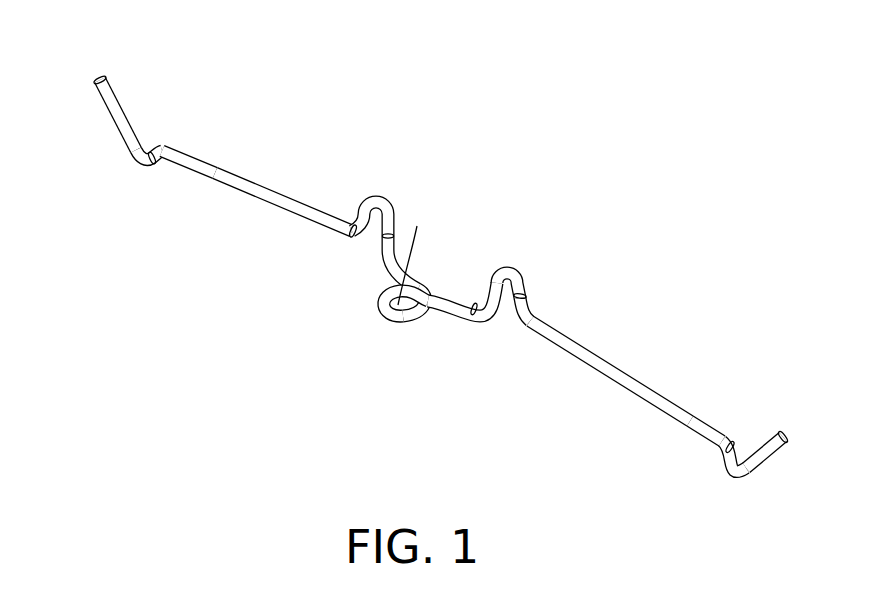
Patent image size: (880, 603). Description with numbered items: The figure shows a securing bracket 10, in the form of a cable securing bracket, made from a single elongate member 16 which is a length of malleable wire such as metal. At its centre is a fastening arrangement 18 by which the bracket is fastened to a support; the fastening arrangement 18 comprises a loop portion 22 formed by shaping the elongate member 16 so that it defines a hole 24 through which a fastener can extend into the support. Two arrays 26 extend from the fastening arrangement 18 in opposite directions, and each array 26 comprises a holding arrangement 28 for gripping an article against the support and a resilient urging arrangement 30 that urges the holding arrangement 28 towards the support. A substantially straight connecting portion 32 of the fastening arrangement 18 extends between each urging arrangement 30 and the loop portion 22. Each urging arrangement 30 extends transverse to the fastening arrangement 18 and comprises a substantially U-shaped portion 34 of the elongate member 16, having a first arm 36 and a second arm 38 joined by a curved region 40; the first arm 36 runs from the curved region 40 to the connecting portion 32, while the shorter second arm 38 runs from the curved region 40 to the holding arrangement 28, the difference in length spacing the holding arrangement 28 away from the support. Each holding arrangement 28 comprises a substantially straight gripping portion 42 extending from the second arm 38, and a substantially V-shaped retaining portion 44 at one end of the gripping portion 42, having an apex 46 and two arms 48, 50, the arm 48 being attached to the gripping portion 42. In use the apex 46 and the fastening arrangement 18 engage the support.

The securing bracket 10 is at (208, 66).
The elongate member 16 is at (618, 360).
The fastening arrangement 18 is at (394, 329).
The loop portion 22 is at (378, 300).
The hole 24 is at (393, 233).
The arrays 26 is at (270, 183).
The holding arrangement 28 is at (104, 125).
The resilient urging arrangement 30 is at (376, 191).
The connecting portion 32 is at (406, 270).
The U-shaped portion 34 is at (365, 206).
The first arm 36 is at (389, 210).
The second arm 38 is at (348, 232).
The curved region 40 is at (362, 246).
The gripping portion 42 is at (186, 176).
The retaining portion 44 is at (121, 82).
The apex 46 is at (138, 167).
The arm 48 is at (150, 152).
The arm 50 is at (97, 85).